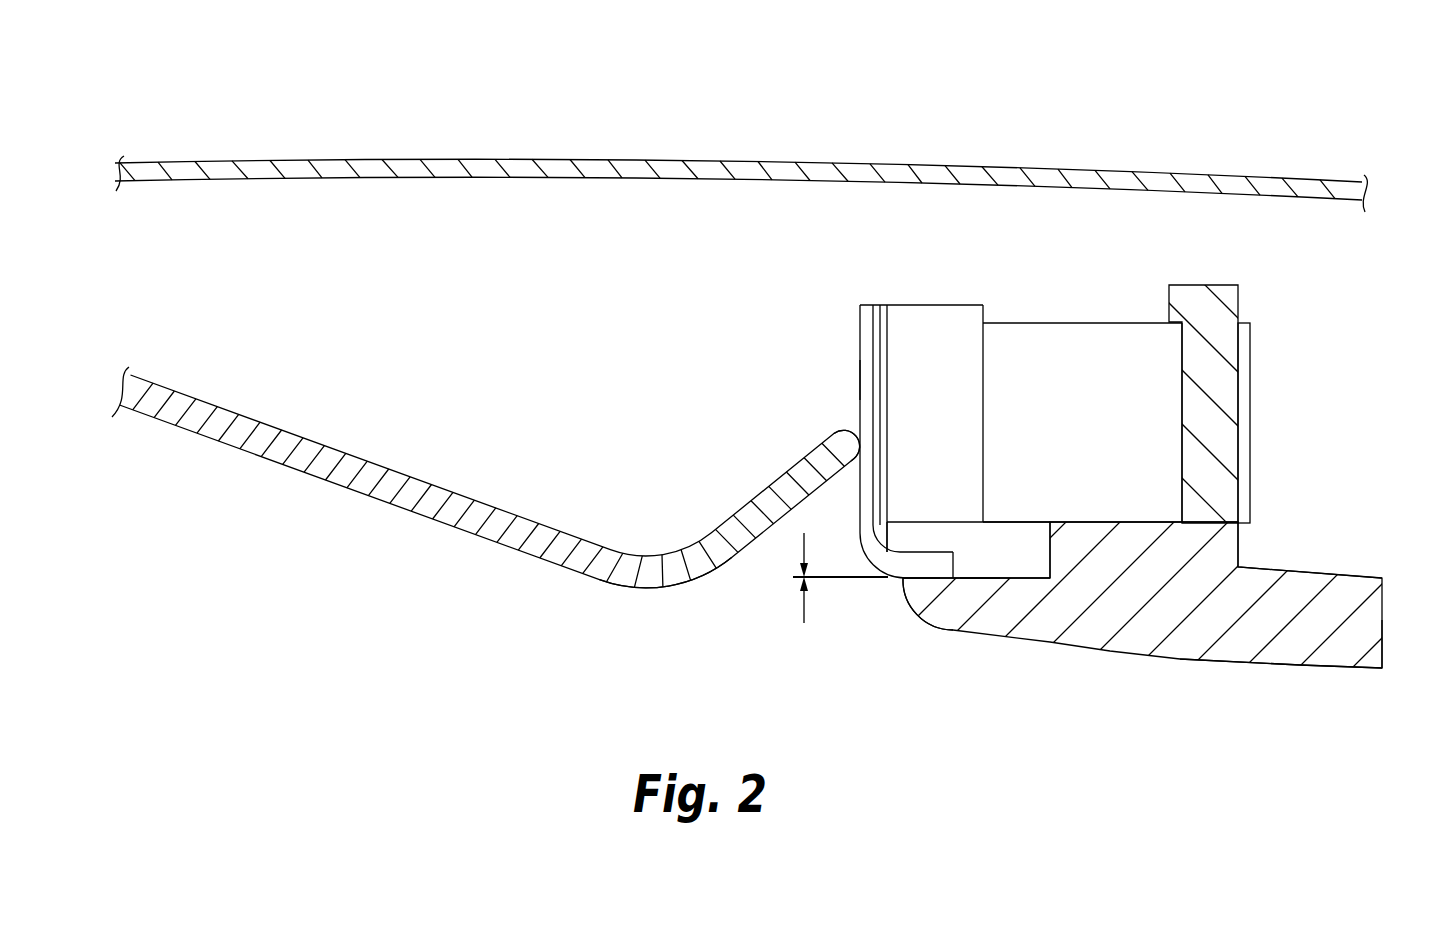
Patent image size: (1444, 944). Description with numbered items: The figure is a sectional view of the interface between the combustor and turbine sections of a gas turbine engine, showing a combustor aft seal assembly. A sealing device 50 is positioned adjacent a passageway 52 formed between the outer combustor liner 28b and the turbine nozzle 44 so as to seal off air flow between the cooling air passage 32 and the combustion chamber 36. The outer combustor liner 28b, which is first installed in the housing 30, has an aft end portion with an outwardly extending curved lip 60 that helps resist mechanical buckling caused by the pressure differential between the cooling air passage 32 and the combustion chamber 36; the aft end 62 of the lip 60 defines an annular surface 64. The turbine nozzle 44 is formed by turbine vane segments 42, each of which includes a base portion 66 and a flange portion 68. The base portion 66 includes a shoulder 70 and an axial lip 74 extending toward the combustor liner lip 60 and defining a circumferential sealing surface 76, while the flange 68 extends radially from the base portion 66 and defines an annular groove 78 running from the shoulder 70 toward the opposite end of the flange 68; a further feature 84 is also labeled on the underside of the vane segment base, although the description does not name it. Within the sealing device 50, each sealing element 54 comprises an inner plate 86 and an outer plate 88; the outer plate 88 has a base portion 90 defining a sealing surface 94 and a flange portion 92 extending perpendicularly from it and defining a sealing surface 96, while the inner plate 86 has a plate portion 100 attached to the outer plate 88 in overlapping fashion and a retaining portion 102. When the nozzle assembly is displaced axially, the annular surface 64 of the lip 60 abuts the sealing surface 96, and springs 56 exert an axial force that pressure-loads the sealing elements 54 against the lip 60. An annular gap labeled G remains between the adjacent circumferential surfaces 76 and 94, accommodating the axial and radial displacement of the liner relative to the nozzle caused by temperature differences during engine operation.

The housing 30 is at (592, 160).
The outer combustor liner 28b is at (350, 444).
The cooling air passage 32 is at (641, 351).
The combustion chamber 36 is at (383, 561).
The sealing device 50 is at (1038, 292).
The passageway 52 is at (823, 561).
The sealing element 54 is at (912, 293).
The spring 56 is at (1108, 312).
The curved lip 60 is at (672, 588).
The aft end 62 is at (857, 425).
The annular surface 64 is at (862, 458).
The base portion 66 is at (1383, 618).
The flange portion 68 is at (1242, 297).
The shoulder 70 is at (1036, 580).
The axial lip 74 is at (912, 590).
The circumferential sealing surface 76 is at (982, 580).
The annular groove 78 is at (1181, 401).
The bottom surface 84 is at (1234, 674).
The inner plate 86 is at (880, 303).
The outer plate 88 is at (866, 303).
The base portion 90 is at (929, 600).
The flange portion 92 is at (867, 338).
The sealing surface 94 is at (922, 582).
The sealing surface 96 is at (860, 386).
The plate portion 100 is at (900, 540).
The retaining portion 102 is at (955, 425).
The turbine vane segment 42 is at (1338, 690).
The turbine nozzle 44 is at (1394, 700).